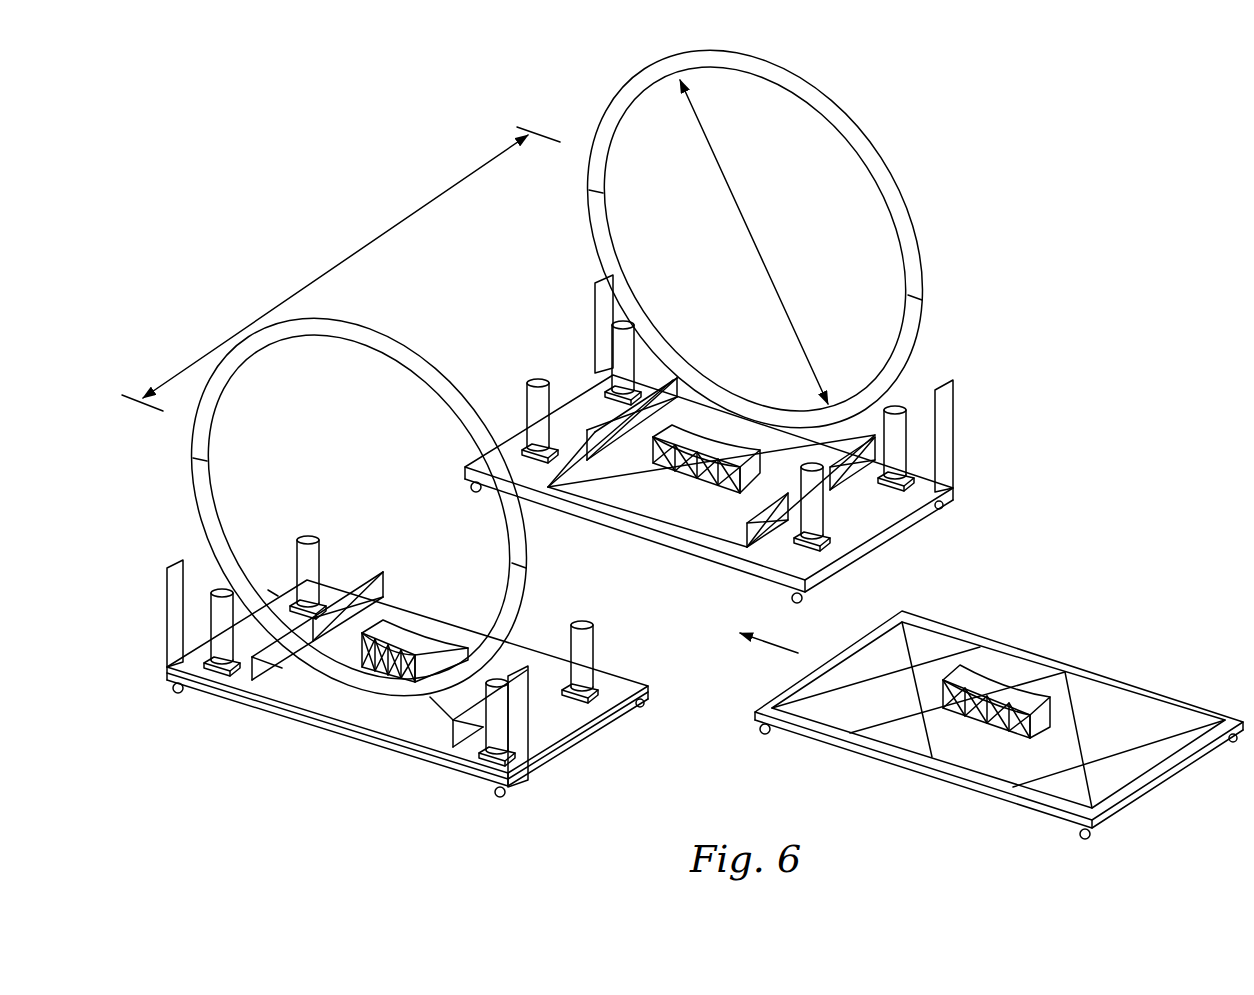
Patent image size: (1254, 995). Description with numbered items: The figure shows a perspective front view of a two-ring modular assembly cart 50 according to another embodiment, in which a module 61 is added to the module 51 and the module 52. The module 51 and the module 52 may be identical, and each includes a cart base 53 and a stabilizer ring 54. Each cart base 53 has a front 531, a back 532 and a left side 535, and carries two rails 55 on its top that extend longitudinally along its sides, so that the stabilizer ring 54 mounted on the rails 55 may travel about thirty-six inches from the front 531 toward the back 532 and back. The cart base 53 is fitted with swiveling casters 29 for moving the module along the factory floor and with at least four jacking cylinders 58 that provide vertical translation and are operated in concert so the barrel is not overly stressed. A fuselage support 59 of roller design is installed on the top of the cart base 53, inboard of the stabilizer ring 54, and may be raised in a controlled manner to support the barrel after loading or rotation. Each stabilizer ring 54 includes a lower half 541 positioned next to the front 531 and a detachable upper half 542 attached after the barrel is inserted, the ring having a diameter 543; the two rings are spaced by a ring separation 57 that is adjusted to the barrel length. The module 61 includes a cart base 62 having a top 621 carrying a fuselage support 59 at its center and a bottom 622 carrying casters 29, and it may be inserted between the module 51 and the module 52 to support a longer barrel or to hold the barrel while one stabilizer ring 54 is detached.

The caster 29 is at (473, 488).
The two-ring modular assembly cart 50 is at (407, 760).
The module 51 is at (565, 772).
The module 52 is at (773, 509).
The cart base 53 is at (560, 550).
The front 531 is at (843, 408).
The back 532 is at (627, 523).
The left side 535 is at (272, 592).
The stabilizer ring 54 is at (557, 379).
The lower half 541 is at (748, 417).
The upper half 542 is at (627, 95).
The diameter 543 is at (752, 236).
The rail 55 is at (638, 403).
The ring separation 57 is at (430, 203).
The jacking cylinder 58 is at (622, 343).
The fuselage support 59 is at (710, 448).
The module 61 is at (1063, 643).
The cart base 62 is at (999, 729).
The top 621 is at (938, 644).
The bottom 622 is at (1157, 787).